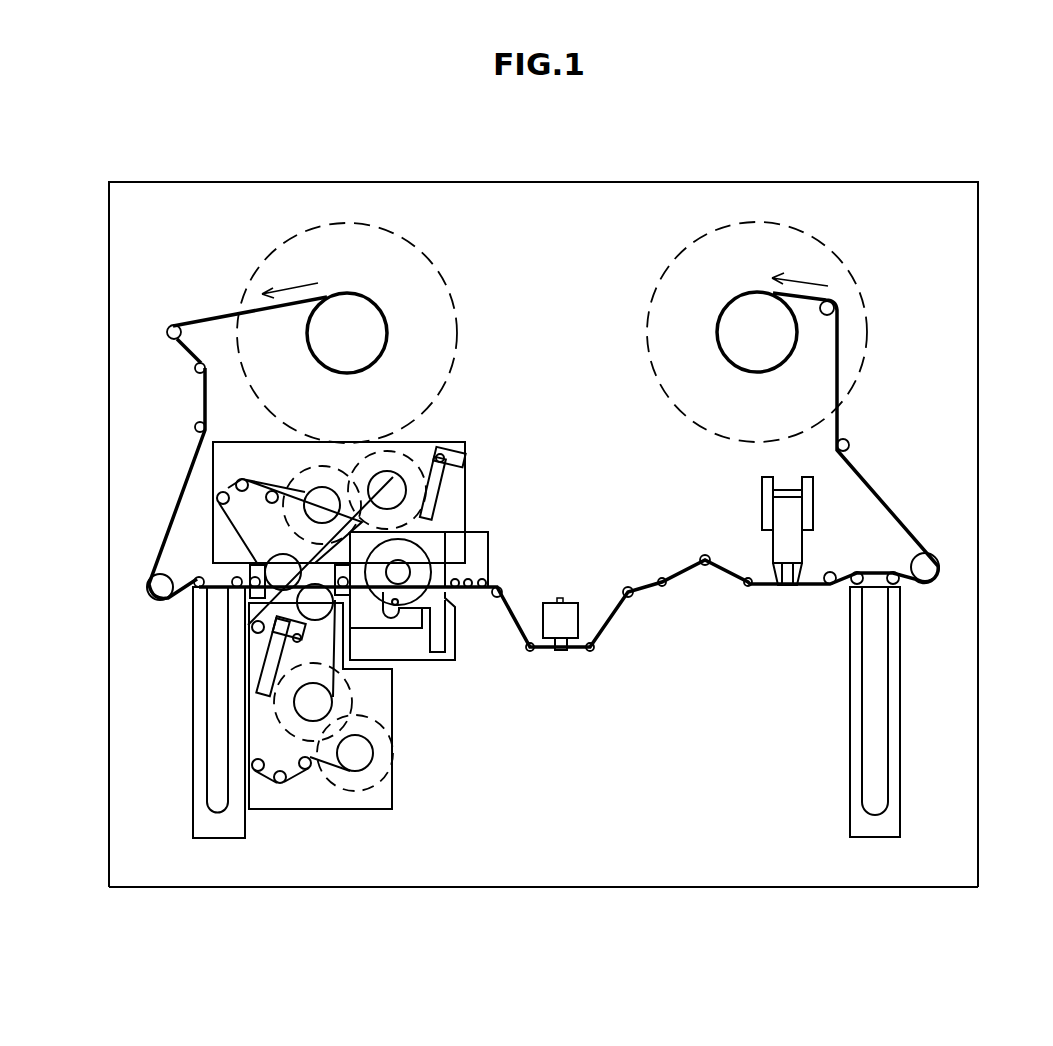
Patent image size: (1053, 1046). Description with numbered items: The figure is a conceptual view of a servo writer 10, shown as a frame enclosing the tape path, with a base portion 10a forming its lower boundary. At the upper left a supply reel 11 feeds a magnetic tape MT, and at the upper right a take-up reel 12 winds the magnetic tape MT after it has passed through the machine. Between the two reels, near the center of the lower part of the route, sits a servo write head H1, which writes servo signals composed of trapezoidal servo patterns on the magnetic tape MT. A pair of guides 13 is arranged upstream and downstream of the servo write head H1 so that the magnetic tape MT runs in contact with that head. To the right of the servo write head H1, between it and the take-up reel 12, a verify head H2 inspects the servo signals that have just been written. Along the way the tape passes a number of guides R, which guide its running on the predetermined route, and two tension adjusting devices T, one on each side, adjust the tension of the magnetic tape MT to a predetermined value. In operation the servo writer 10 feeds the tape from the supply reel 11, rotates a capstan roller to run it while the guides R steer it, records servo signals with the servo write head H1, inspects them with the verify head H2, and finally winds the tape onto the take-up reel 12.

The servo writer 10 is at (552, 277).
The base of servo writer 10a is at (707, 792).
The supply reel 11 is at (347, 323).
The take-up reel 12 is at (753, 320).
The guide 13 is at (558, 656).
The magnetic tape MT is at (213, 313).
The guide R is at (195, 422).
The tension adjusting device T is at (172, 731).
The servo write head H1 is at (562, 676).
The verify head H2 is at (793, 604).